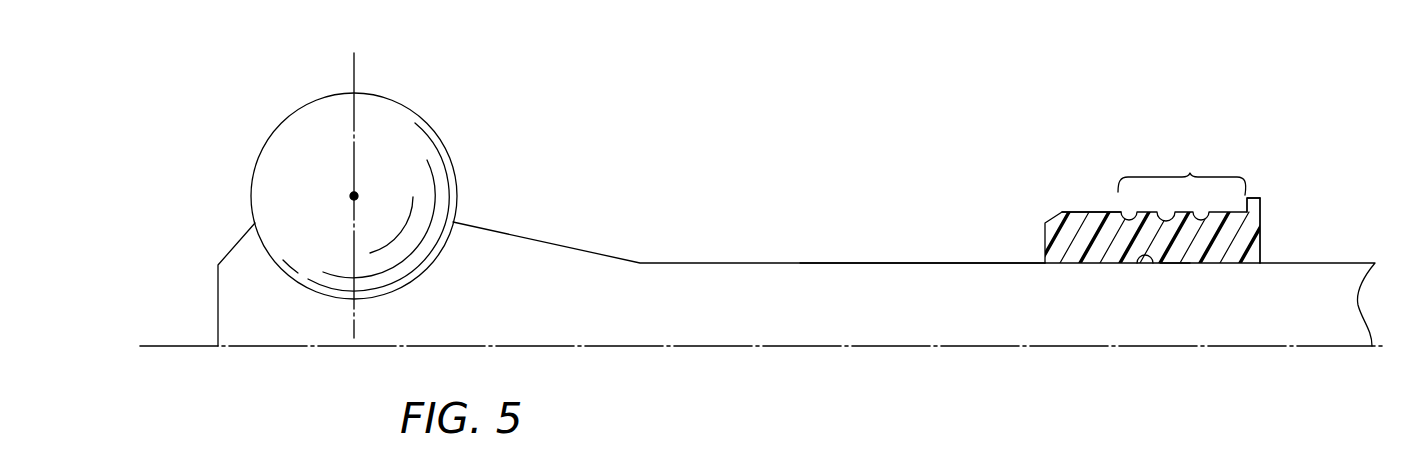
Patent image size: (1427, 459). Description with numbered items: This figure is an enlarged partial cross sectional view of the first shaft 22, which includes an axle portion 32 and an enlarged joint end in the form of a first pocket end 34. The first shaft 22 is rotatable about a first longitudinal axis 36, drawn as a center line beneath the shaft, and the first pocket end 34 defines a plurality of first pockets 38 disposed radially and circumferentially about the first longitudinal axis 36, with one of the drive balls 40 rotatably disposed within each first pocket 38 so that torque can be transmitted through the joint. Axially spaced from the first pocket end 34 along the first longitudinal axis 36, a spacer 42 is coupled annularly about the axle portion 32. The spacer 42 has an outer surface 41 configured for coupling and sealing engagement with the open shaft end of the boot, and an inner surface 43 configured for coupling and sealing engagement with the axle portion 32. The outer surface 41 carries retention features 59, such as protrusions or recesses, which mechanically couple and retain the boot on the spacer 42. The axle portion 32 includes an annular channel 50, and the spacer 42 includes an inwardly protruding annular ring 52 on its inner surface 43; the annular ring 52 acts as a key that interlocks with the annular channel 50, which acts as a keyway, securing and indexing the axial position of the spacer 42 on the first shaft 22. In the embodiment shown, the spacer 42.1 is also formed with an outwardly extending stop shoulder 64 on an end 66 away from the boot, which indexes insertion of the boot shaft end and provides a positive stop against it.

The first shaft 22 is at (732, 264).
The axle portion 32 is at (853, 287).
The first pocket end 34 is at (237, 278).
The first longitudinal axis 36 is at (813, 347).
The first pocket 38 is at (437, 267).
The drive ball 40 is at (428, 120).
The outer surface 41 is at (1100, 212).
The spacer 42 is at (1119, 179).
The spacer 42.1 is at (1088, 211).
The inner surface 43 is at (1272, 261).
The annular channel 50 is at (1137, 263).
The annular ring 52 is at (1173, 263).
The retention feature 59 is at (1190, 175).
The stop shoulder 64 is at (1248, 197).
The end 66 is at (1260, 223).